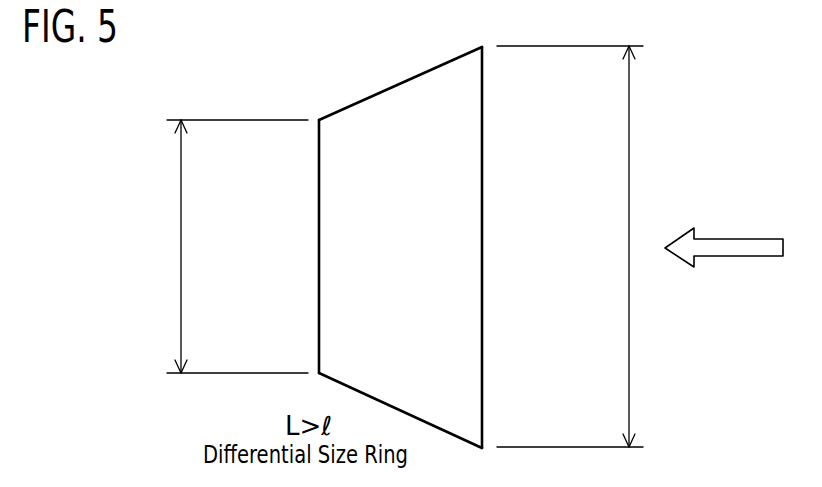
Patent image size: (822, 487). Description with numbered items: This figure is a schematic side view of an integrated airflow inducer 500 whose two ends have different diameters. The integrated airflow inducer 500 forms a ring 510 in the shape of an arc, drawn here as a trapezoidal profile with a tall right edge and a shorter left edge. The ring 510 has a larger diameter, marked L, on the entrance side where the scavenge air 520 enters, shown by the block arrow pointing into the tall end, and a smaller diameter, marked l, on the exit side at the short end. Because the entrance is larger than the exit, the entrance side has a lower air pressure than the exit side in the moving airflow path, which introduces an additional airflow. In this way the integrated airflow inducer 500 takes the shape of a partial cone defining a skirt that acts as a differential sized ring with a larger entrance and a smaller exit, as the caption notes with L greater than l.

The integrated airflow inducer 500 is at (395, 80).
The ring 510 is at (420, 317).
The scavenge air 520 is at (733, 239).